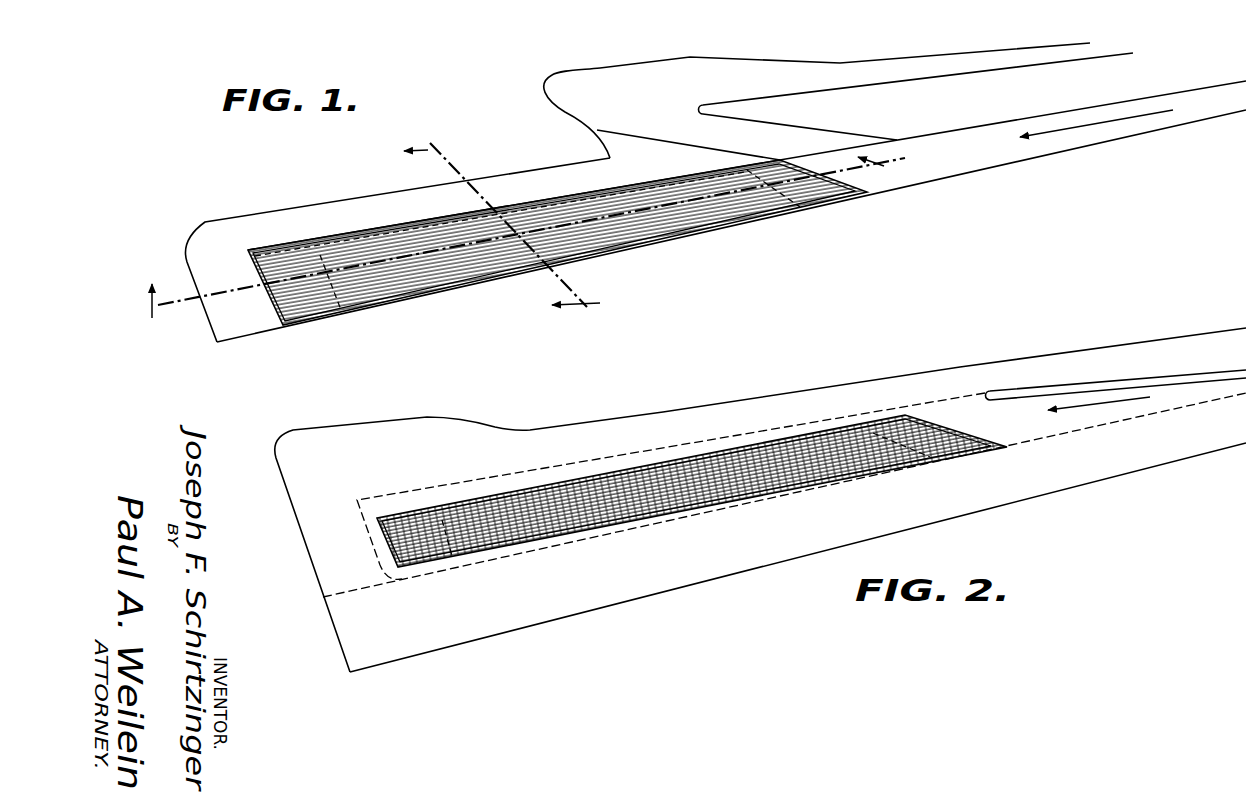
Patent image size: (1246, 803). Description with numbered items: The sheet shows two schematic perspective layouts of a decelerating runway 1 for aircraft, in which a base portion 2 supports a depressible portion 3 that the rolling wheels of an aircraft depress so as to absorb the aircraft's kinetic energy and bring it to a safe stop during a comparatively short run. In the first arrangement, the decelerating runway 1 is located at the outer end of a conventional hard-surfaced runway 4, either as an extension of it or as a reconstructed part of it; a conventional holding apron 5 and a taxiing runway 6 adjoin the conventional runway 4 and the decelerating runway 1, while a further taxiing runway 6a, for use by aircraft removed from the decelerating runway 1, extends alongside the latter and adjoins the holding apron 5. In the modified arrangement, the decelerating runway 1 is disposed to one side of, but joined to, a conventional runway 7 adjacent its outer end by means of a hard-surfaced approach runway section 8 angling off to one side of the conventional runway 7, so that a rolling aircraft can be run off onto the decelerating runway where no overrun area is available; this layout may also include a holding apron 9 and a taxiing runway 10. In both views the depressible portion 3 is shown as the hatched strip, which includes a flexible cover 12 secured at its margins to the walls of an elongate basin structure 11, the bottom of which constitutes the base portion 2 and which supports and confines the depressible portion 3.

In FIG. 1, the decelerating runway 1 is at (552, 197).
In FIG. 2, the decelerating runway 1 is at (738, 427).
In FIG. 1, the base portion 2 is at (636, 247).
In FIG. 2, the base portion 2 is at (833, 468).
In FIG. 1, the depressible portion 3 is at (498, 260).
In FIG. 2, the depressible portion 3 is at (648, 509).
In FIG. 1, the conventional hard-surfaced runway 4 is at (1024, 171).
In FIG. 1, the holding apron 5 is at (615, 77).
In FIG. 1, the taxiing runway 6 is at (913, 67).
In FIG. 1, the taxiing runway 6a is at (373, 205).
In FIG. 2, the conventional runway 7 is at (1110, 463).
In FIG. 2, the hard-surfaced approach runway section 8 is at (1203, 380).
In FIG. 2, the holding apron 9 is at (340, 433).
In FIG. 2, the taxiing runway 10 is at (1117, 356).
In FIG. 1, the elongate basin structure 11 is at (667, 229).
In FIG. 2, the elongate basin structure 11 is at (761, 488).
In FIG. 1, the flexible cover 12 is at (430, 279).
In FIG. 2, the flexible cover 12 is at (480, 500).